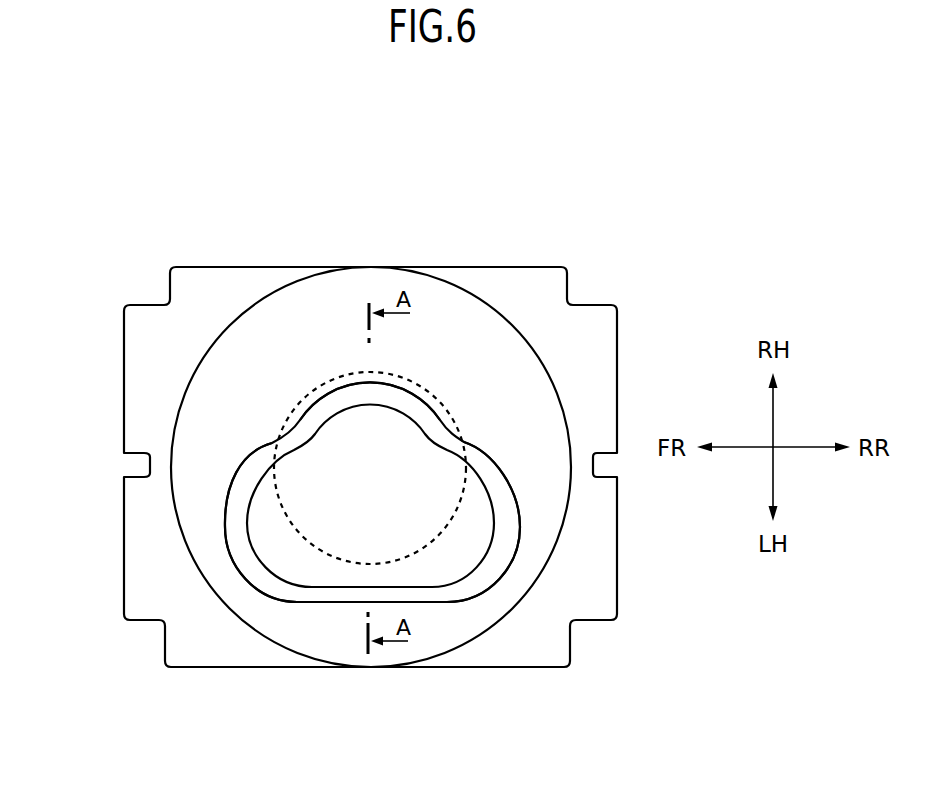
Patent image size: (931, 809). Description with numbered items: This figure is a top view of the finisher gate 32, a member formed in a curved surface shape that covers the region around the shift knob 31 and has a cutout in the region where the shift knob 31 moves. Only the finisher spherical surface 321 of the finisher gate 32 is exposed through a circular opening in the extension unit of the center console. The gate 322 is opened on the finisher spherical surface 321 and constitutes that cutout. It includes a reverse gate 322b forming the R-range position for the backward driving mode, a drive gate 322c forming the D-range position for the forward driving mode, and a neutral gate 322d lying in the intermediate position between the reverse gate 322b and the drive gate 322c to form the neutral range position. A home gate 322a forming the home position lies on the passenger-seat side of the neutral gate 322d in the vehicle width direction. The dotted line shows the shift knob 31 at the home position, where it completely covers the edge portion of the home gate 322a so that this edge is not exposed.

The shift knob 31 is at (407, 374).
The finisher gate 32 is at (402, 258).
The finisher spherical surface 321 is at (520, 378).
The gate 322 is at (290, 578).
The home gate 322a is at (350, 395).
The reverse gate 322b is at (235, 522).
The drive gate 322c is at (505, 528).
The neutral gate 322d is at (380, 593).